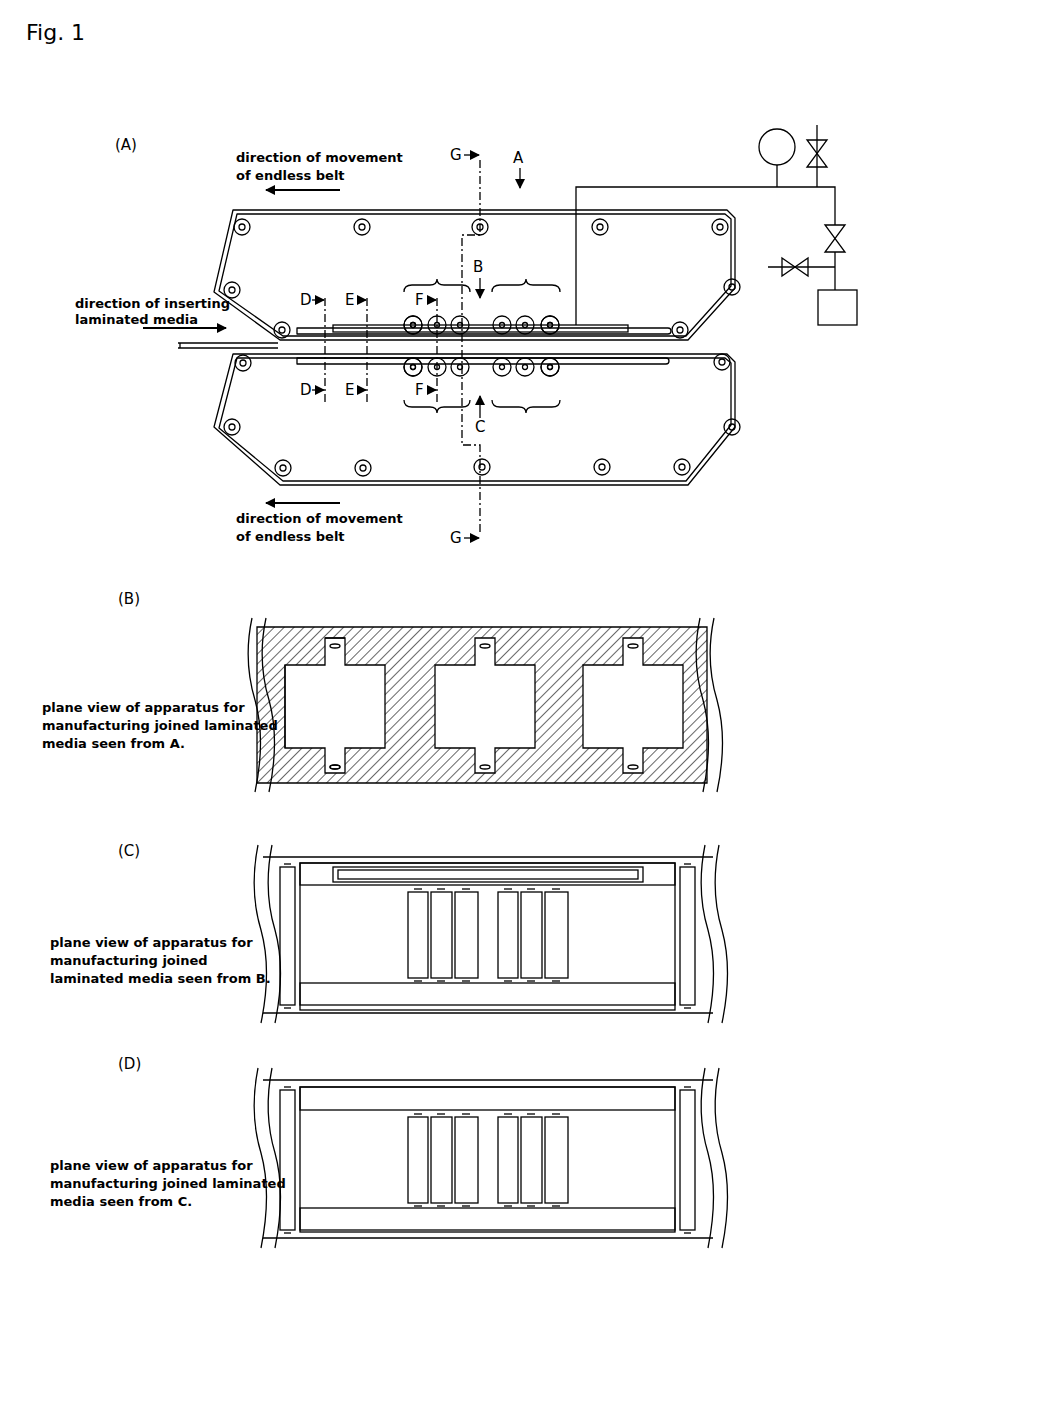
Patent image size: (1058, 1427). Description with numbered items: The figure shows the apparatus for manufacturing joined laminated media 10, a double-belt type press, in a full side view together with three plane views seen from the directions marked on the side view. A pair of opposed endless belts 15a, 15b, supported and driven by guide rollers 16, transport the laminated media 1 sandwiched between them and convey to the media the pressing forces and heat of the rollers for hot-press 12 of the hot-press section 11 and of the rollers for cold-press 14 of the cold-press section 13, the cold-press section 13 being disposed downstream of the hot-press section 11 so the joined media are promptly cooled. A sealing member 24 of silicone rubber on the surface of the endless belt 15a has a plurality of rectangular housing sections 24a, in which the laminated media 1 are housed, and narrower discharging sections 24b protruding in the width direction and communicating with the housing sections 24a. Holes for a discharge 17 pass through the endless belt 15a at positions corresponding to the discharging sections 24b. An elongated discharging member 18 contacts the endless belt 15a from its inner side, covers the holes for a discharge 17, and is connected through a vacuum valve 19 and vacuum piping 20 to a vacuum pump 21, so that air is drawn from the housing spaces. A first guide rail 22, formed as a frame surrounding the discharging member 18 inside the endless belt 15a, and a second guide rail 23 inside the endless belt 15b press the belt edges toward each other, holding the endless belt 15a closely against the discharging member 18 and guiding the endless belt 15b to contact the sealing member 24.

The laminated media 1 is at (182, 350).
The apparatus for manufacturing joined laminated media 10 is at (222, 188).
The hot-press section 11 is at (437, 345).
The rollers for hot-press 12 is at (408, 318).
The cold-press section 13 is at (526, 345).
The rollers for cold-press 14 is at (560, 320).
The endless belt 15a is at (233, 213).
The endless belt 15b is at (258, 475).
The guide roller 16 is at (372, 222).
The hole for a discharge 17 is at (330, 772).
The discharging member 18 is at (632, 330).
The vacuum valve 19 is at (826, 232).
The vacuum piping 20 is at (632, 187).
The vacuum pump 21 is at (820, 322).
The first guide rail 22 is at (296, 330).
The second guide rail 23 is at (300, 366).
The sealing member 24 is at (422, 210).
The housing section 24a is at (287, 662).
The discharging section 24b is at (340, 640).